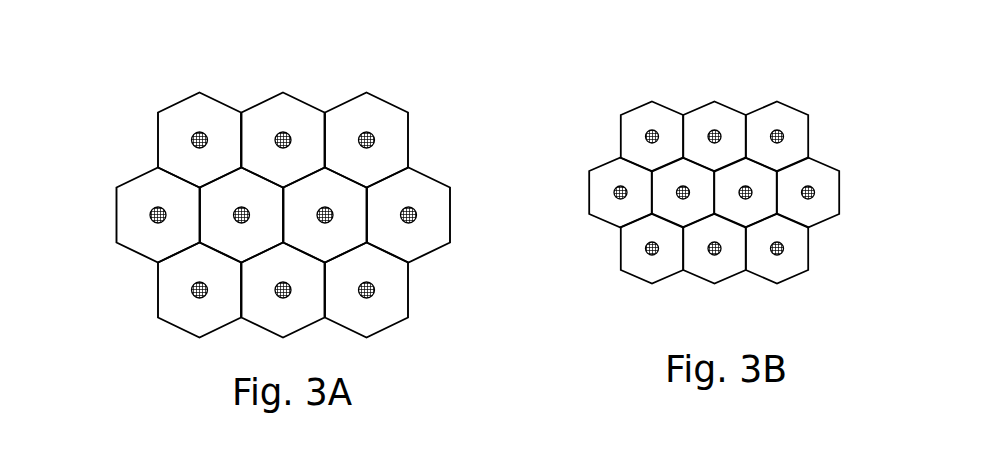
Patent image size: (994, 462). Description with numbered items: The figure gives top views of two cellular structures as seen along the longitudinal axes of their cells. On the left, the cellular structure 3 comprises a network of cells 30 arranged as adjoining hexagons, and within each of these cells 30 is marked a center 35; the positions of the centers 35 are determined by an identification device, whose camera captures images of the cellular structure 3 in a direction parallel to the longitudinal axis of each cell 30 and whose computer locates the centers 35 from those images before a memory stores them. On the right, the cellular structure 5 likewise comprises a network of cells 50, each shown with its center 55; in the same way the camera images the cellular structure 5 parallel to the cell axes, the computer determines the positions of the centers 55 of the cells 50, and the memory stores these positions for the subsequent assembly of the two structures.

In FIG. 3A, the cellular structure 3 is at (260, 183).
In FIG. 3A, the cells 30 is at (215, 118).
In FIG. 3A, the centers 35 is at (195, 133).
In FIG. 3B, the cellular structure 5 is at (728, 156).
In FIG. 3B, the cells 50 is at (665, 125).
In FIG. 3B, the centers 55 is at (649, 130).